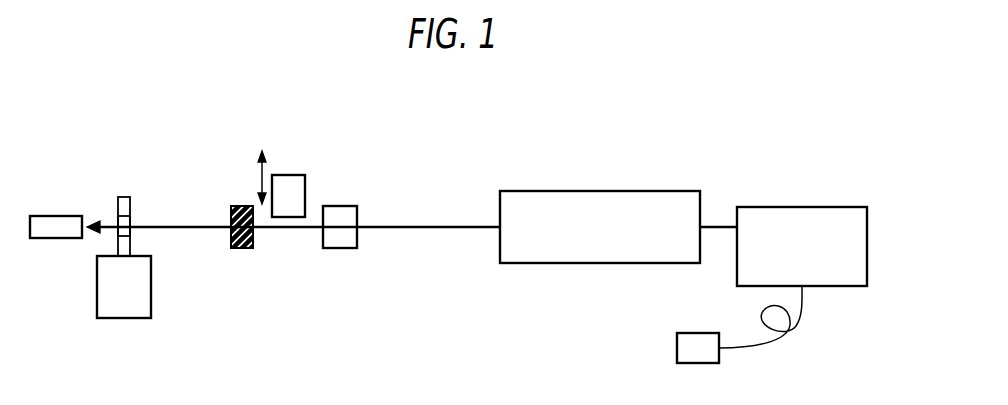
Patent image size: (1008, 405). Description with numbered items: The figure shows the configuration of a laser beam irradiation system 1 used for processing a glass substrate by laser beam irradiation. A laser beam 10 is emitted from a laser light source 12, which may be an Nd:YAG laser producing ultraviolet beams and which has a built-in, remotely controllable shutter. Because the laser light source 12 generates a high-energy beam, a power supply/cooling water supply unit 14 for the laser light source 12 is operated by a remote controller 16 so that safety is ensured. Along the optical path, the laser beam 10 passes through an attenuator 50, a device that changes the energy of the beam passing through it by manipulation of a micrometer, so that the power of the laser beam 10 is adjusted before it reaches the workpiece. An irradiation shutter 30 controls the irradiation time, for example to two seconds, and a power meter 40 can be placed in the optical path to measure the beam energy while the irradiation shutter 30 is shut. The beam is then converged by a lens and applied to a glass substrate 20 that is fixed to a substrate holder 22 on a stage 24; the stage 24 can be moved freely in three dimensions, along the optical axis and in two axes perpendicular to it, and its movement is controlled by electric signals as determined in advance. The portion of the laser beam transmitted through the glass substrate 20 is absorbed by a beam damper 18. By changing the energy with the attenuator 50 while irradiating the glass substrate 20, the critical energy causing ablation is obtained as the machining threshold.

The laser beam irradiation system 1 is at (461, 173).
The laser beam 10 is at (430, 225).
The laser light source 12 is at (602, 190).
The power supply/cooling water supply unit 14 is at (802, 206).
The remote controller 16 is at (677, 350).
The beam damper 18 is at (57, 215).
The glass substrate 20 is at (131, 219).
The substrate holder 22 is at (125, 196).
The stage 24 is at (97, 290).
The irradiation shutter 30 is at (243, 250).
The power meter 40 is at (290, 173).
The attenuator 50 is at (341, 205).